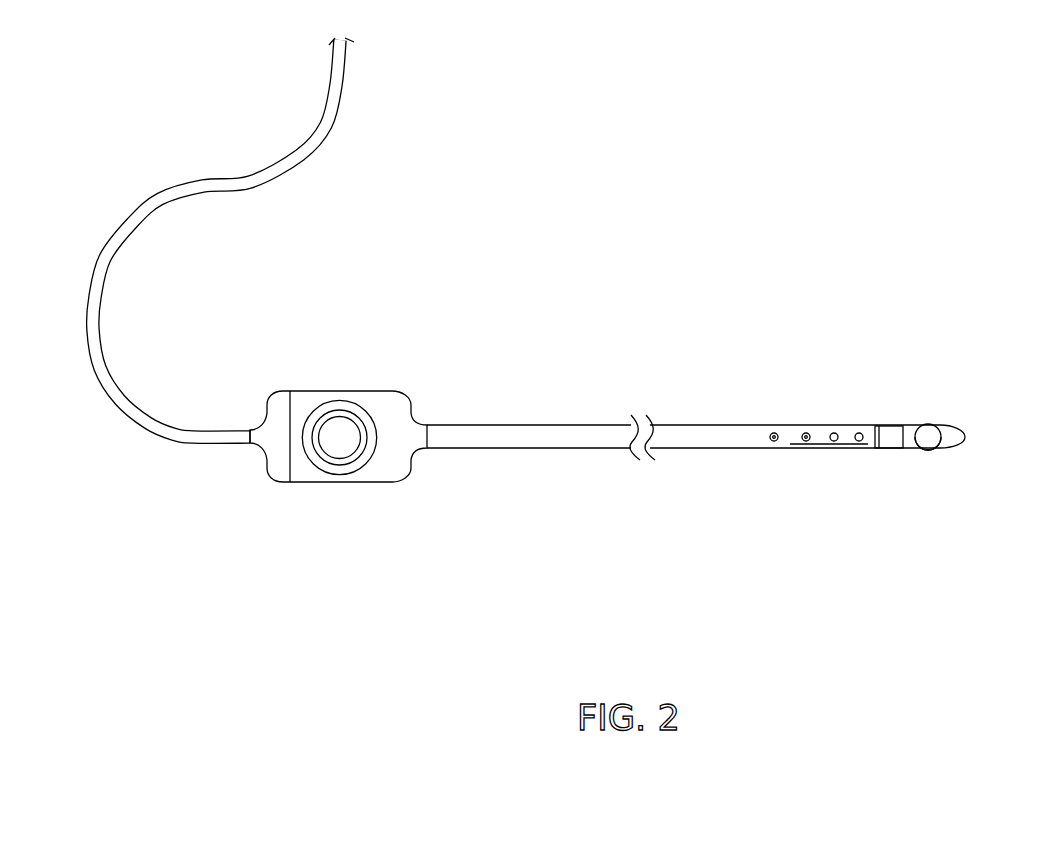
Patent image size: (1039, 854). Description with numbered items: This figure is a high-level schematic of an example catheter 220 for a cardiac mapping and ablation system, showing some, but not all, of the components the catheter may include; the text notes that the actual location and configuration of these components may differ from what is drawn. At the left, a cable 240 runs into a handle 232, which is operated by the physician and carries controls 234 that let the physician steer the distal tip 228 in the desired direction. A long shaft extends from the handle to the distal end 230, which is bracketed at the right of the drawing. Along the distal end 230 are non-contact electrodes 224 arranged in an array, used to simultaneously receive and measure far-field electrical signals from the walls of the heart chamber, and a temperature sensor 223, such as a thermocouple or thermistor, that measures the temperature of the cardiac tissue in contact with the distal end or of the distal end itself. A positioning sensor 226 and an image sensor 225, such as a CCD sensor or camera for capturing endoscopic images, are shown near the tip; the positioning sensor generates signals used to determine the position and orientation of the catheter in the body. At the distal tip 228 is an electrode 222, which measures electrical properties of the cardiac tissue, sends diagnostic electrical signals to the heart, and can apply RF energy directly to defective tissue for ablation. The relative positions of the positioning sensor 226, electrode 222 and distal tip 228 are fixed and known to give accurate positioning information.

The catheter 220 is at (823, 115).
The electrode 222 is at (928, 448).
The temperature sensor 223 is at (828, 446).
The non-contact electrodes 224 is at (806, 433).
The image sensor 225 is at (926, 425).
The positioning sensor 226 is at (892, 425).
The distal tip 228 is at (966, 437).
The distal end 230 is at (963, 507).
The handle 232 is at (358, 484).
The controls 234 is at (330, 402).
The cable 240 is at (342, 98).